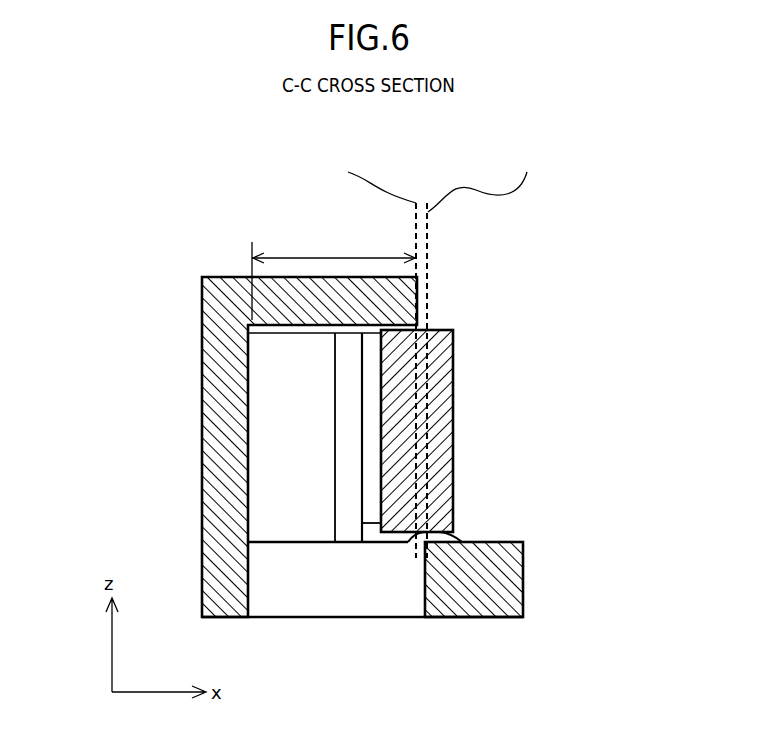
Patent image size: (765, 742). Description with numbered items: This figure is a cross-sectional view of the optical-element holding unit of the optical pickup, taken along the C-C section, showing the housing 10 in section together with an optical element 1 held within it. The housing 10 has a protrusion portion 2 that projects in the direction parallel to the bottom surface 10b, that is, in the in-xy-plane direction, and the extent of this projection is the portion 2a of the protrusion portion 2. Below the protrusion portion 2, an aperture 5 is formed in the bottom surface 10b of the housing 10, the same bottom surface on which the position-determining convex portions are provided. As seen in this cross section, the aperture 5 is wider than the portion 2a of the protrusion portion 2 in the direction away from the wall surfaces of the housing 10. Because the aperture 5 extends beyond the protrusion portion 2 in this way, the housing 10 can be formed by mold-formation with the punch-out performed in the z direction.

The element 1 is at (440, 410).
The protrusion portion 2 is at (407, 303).
The portion of the protrusion portion 2a is at (334, 275).
The aperture 5 is at (330, 588).
The housing 10 is at (235, 418).
The bottom surface 10b is at (507, 542).